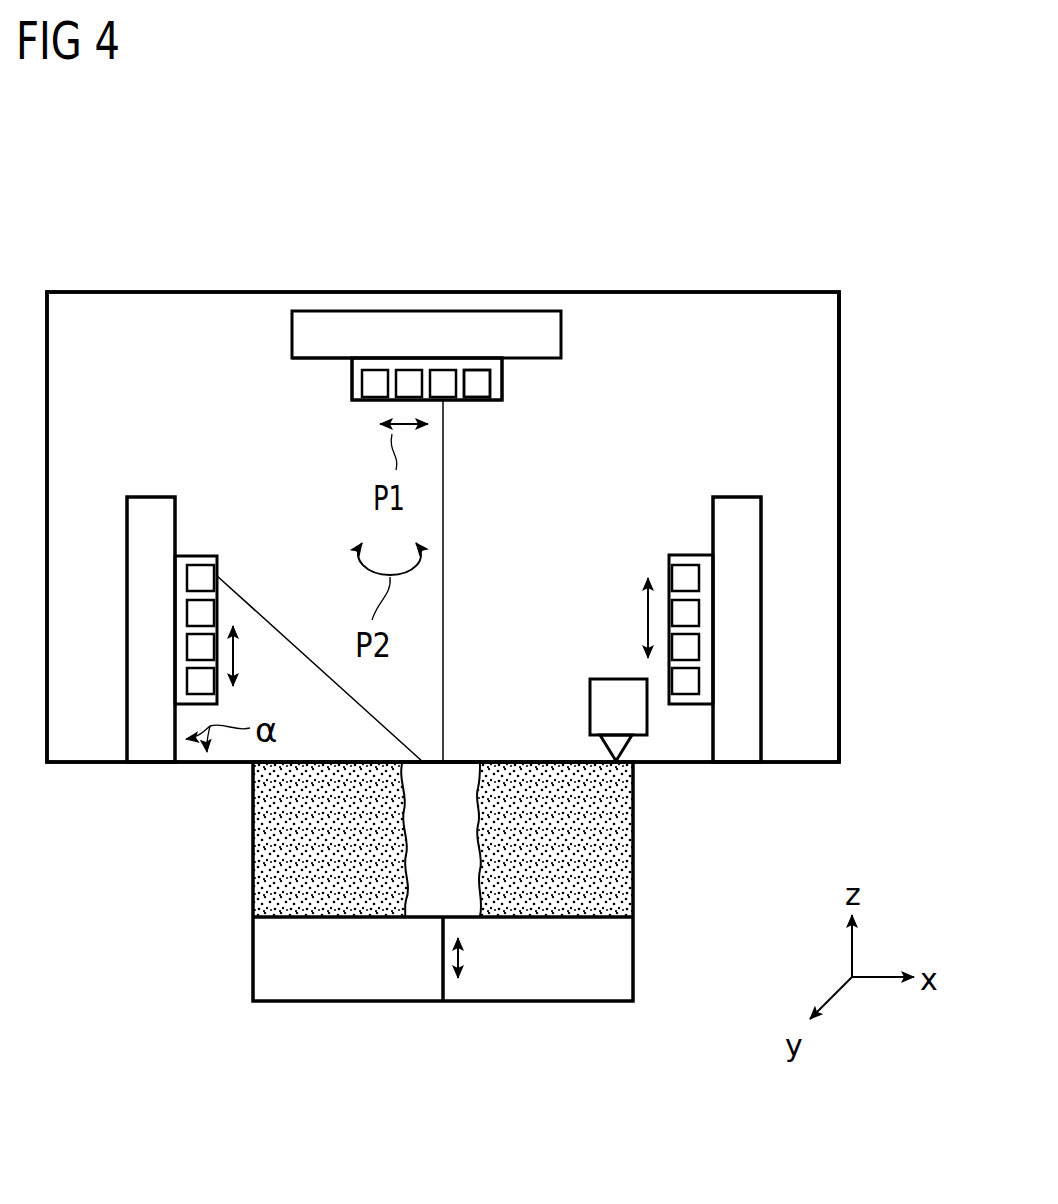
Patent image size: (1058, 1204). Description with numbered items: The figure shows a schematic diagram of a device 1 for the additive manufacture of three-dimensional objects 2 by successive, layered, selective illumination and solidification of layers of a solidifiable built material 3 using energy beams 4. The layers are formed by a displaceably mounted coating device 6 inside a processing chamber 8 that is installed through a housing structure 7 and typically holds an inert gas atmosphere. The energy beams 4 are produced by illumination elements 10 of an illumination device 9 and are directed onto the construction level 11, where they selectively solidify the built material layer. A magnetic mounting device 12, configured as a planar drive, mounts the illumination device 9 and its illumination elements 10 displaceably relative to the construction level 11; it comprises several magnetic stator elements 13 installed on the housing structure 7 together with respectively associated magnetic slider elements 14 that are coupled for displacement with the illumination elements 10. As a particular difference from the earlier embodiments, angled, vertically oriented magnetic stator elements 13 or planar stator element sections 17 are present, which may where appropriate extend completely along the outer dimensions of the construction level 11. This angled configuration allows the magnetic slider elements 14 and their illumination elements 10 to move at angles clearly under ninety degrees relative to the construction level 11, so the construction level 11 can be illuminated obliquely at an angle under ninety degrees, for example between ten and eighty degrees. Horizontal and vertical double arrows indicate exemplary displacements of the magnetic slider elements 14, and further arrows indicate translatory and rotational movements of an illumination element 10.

The device 1 is at (646, 146).
The three-dimensional object 2 is at (413, 846).
The solidifiable built material 3 is at (622, 878).
The energy beam 4 is at (290, 620).
The coating device 6 is at (588, 706).
The housing structure 7 is at (840, 600).
The processing chamber 8 is at (707, 291).
The illumination device 9 is at (486, 412).
The illumination element 10 is at (368, 404).
The construction level 11 is at (456, 753).
The magnetic mounting device 12 is at (558, 364).
The magnetic stator element 13 is at (575, 328).
The magnetic slider element 14 is at (513, 386).
The planar stator element section 17 is at (310, 359).